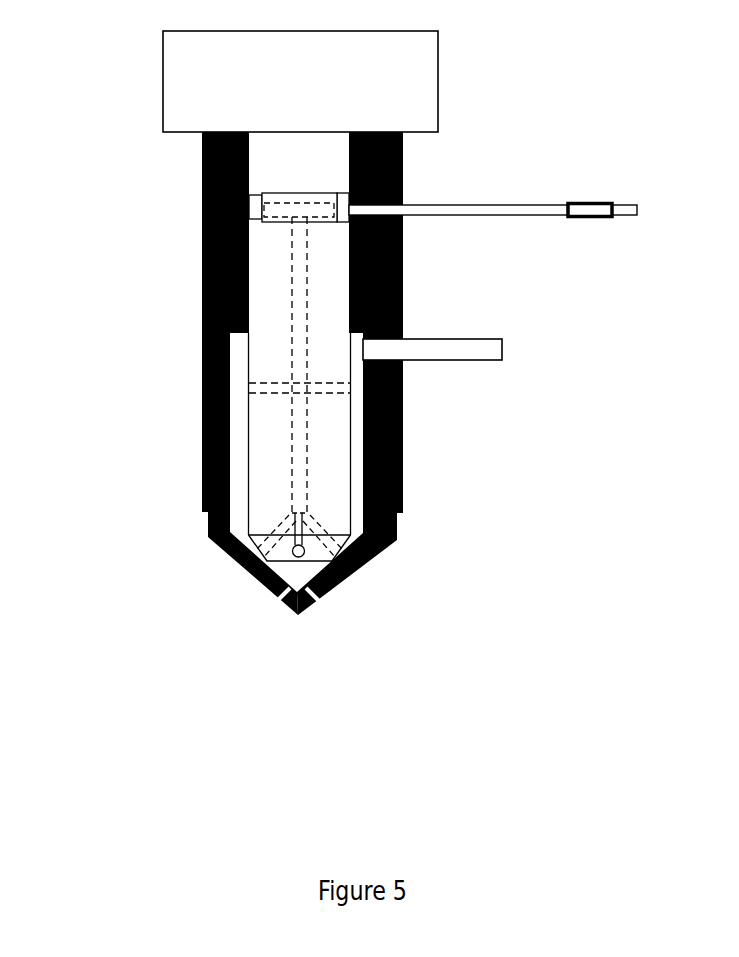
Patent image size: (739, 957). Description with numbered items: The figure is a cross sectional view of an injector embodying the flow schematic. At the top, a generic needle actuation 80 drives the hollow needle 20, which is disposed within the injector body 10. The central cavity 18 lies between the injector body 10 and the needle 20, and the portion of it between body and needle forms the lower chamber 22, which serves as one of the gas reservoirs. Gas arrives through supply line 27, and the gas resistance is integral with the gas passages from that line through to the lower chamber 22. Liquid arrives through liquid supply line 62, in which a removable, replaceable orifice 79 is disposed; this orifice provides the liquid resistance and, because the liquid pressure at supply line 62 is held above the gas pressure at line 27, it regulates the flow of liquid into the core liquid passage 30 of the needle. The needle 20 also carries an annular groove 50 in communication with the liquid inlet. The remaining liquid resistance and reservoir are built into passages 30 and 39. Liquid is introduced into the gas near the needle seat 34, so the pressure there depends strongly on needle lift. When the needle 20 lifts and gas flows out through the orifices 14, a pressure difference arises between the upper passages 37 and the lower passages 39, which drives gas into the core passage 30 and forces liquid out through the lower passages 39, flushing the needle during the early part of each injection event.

The injector body 10 is at (202, 303).
The orifices 14 is at (280, 597).
The central cavity 18 is at (238, 465).
The hollow needle 20 is at (260, 410).
The lower chamber 22 is at (238, 512).
The gas supply line 27 is at (526, 350).
The liquid passage 30 is at (297, 452).
The needle seat 34 is at (350, 573).
The upper passages 37 is at (403, 373).
The lower passages 39 is at (305, 519).
The annular groove 50 is at (202, 237).
The liquid supply line 62 is at (652, 210).
The removable replaceable orifice 79 is at (592, 222).
The needle actuation 80 is at (178, 102).